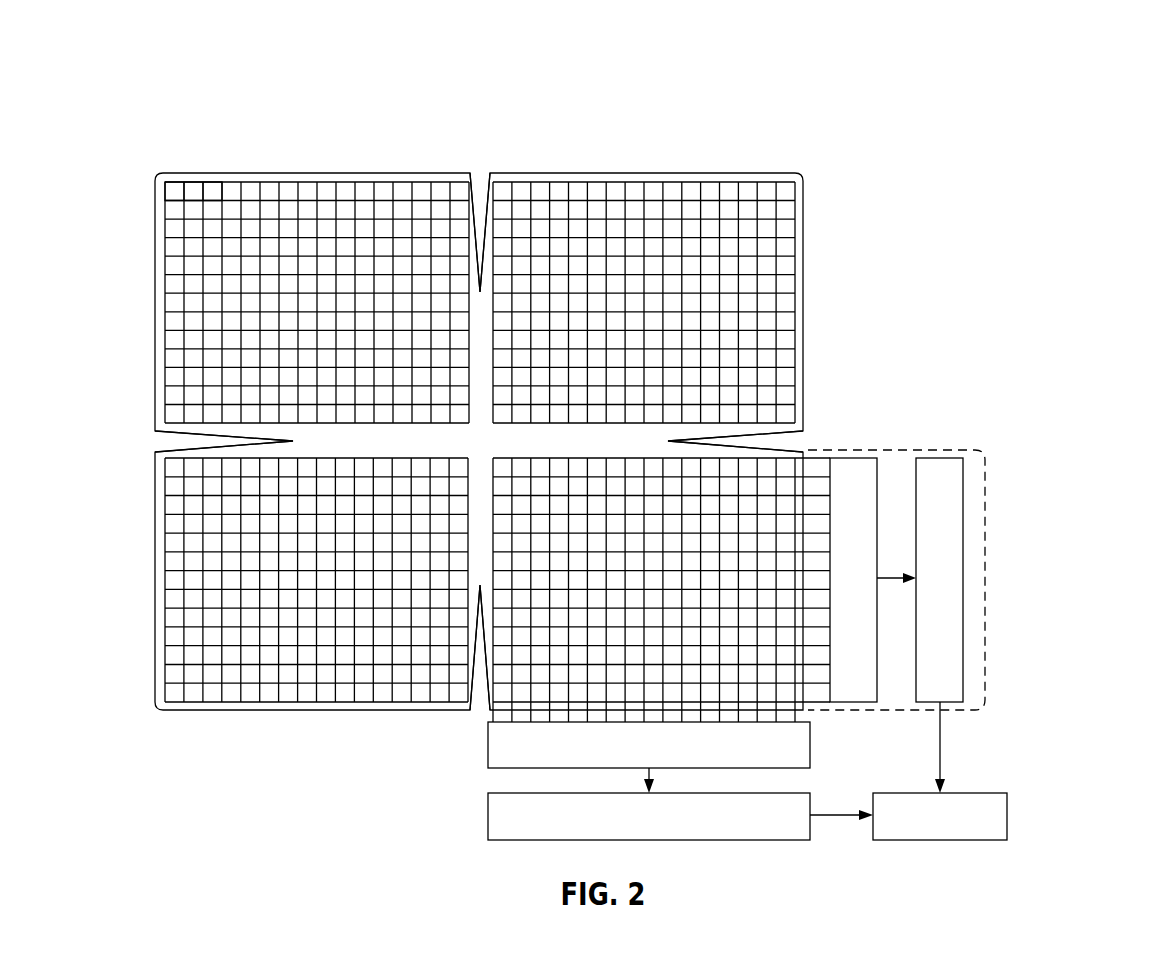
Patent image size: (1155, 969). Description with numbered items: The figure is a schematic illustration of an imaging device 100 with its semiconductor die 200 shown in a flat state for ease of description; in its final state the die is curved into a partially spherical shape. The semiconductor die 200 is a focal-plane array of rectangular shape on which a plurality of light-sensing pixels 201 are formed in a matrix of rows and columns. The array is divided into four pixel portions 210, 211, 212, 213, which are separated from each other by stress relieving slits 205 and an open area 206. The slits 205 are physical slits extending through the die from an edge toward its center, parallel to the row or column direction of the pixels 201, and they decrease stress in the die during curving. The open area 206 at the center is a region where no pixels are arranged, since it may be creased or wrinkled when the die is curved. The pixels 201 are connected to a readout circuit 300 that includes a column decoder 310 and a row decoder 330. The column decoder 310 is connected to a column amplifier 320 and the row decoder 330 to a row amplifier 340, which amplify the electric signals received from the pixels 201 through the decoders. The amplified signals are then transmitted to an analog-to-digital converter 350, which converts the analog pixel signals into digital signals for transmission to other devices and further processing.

The imaging device 100 is at (928, 50).
The semiconductor die 200 is at (801, 172).
The pixels 201 is at (212, 187).
The slits 205 is at (481, 180).
The open area 206 is at (480, 432).
The pixel portion 210 is at (155, 173).
The pixel portion 211 is at (155, 452).
The pixel portion 212 is at (803, 173).
The pixel portion 213 is at (985, 452).
The readout circuit 300 is at (1050, 452).
The column decoder 310 is at (811, 746).
The column amplifier 320 is at (760, 841).
The row decoder 330 is at (866, 456).
The row amplifier 340 is at (941, 456).
The analog-to-digital converter (ADC) 350 is at (955, 841).